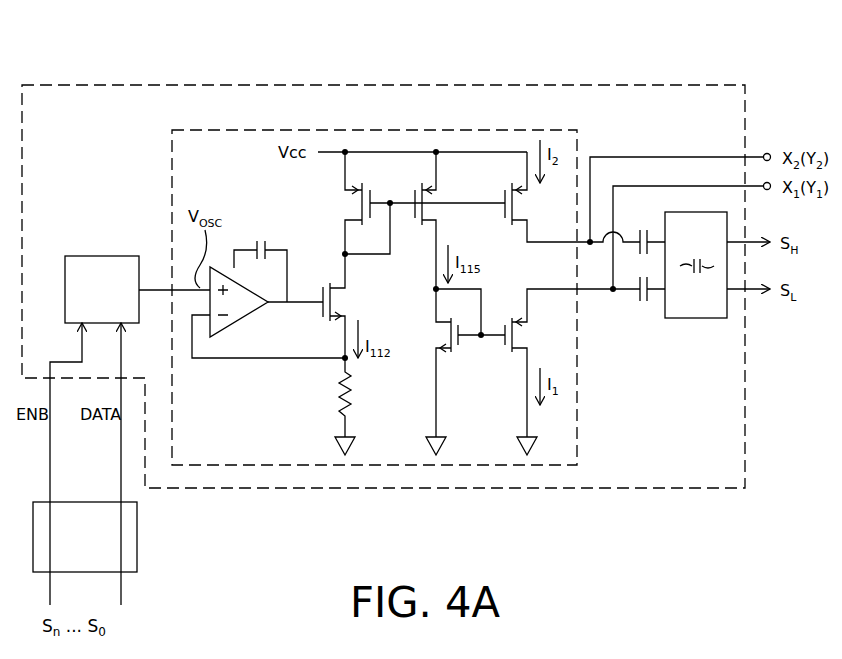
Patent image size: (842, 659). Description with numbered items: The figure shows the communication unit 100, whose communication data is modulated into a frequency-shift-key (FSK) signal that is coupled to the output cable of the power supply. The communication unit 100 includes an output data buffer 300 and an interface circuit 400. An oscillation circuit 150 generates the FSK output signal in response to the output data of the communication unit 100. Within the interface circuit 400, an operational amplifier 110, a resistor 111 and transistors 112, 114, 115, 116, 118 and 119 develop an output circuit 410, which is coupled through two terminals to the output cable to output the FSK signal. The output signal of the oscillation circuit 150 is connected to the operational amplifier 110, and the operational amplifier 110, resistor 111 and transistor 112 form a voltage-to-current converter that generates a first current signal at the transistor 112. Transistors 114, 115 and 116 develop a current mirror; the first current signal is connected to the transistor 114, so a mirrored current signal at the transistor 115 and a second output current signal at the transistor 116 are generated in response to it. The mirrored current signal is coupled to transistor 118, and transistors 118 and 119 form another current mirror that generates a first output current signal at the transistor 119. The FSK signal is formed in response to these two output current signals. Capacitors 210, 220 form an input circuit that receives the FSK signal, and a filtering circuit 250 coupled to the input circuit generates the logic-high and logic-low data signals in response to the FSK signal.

The communication unit 100 is at (677, 35).
The interface circuit 400 is at (445, 85).
The output circuit 410 is at (172, 172).
The oscillation circuit 150 is at (101, 256).
The operational amplifier 110 is at (238, 321).
The resistor 111 is at (353, 405).
The transistor 112 is at (338, 298).
The transistor 114 is at (360, 202).
The transistor 115 is at (424, 200).
The transistor 116 is at (517, 203).
The transistor 118 is at (448, 335).
The transistor 119 is at (518, 335).
The capacitor 210 is at (636, 235).
The capacitor 220 is at (636, 296).
The filtering circuit 250 is at (693, 318).
The output data buffer 300 is at (137, 535).